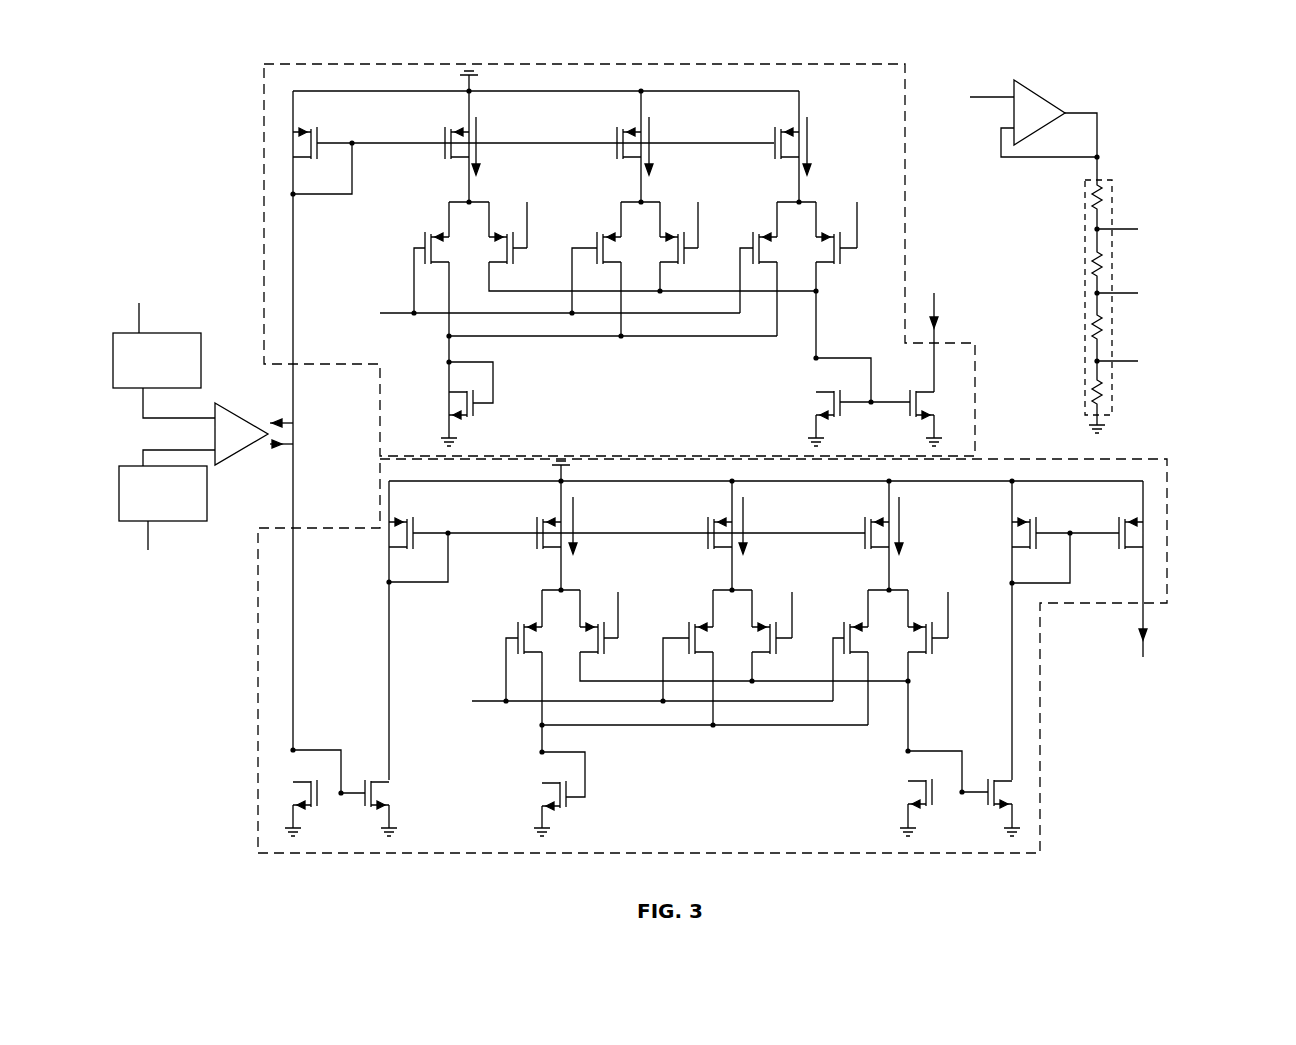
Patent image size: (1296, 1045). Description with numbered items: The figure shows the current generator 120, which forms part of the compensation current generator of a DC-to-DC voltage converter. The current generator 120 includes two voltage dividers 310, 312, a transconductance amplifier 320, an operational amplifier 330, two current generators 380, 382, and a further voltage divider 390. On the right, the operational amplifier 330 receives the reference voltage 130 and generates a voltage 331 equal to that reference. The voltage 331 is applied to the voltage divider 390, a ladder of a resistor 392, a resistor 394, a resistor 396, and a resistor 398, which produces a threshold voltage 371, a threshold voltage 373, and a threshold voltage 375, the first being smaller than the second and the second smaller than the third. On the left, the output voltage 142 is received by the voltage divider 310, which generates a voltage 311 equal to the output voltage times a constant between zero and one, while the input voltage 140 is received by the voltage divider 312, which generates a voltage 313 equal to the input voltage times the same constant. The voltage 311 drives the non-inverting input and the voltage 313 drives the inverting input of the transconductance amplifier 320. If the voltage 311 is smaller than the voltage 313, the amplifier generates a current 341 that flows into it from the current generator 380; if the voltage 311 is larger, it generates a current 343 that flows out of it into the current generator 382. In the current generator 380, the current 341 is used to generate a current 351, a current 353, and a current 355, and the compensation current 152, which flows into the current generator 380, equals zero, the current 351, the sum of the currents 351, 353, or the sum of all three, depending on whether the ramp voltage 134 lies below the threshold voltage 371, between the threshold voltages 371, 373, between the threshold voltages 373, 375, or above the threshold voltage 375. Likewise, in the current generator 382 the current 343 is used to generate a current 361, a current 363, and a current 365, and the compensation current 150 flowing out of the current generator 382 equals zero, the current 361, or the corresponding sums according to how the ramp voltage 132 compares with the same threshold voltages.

The current generator 120 is at (1205, 90).
The reference voltage 130 is at (970, 99).
The ramp voltage 132 is at (474, 704).
The ramp voltage 134 is at (381, 316).
The input voltage 140 is at (148, 541).
The output voltage 142 is at (139, 322).
The compensation current 150 is at (1146, 612).
The compensation current 152 is at (937, 322).
The voltage divider 310 is at (201, 355).
The voltage 311 is at (143, 404).
The voltage divider 312 is at (207, 508).
The voltage 313 is at (143, 455).
The transconductance amplifier 320 is at (232, 466).
The operational amplifier 330 is at (1058, 90).
The voltage 331 is at (1092, 157).
The current 341 is at (282, 420).
The current 343 is at (285, 450).
The current 351 is at (479, 152).
The current 353 is at (651, 152).
The current 355 is at (809, 152).
The current 361 is at (576, 543).
The current 363 is at (746, 543).
The current 365 is at (902, 540).
The threshold voltage 371 is at (533, 208).
The threshold voltage 373 is at (704, 208).
The threshold voltage 375 is at (857, 214).
The current generator 380 is at (264, 190).
The current generator 382 is at (1040, 842).
The voltage divider 390 is at (1118, 174).
The resistor 392 is at (1092, 402).
The resistor 394 is at (1092, 338).
The resistor 396 is at (1092, 277).
The resistor 398 is at (1092, 212).